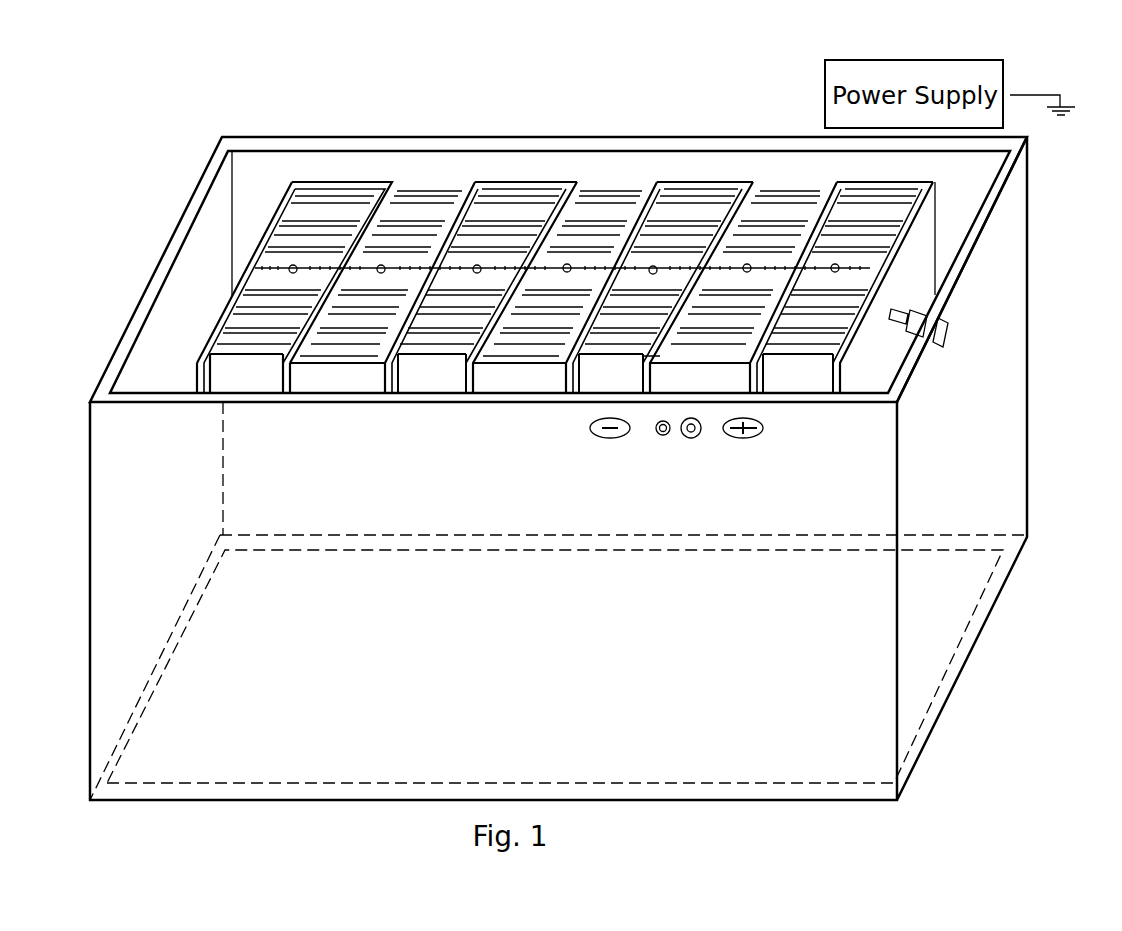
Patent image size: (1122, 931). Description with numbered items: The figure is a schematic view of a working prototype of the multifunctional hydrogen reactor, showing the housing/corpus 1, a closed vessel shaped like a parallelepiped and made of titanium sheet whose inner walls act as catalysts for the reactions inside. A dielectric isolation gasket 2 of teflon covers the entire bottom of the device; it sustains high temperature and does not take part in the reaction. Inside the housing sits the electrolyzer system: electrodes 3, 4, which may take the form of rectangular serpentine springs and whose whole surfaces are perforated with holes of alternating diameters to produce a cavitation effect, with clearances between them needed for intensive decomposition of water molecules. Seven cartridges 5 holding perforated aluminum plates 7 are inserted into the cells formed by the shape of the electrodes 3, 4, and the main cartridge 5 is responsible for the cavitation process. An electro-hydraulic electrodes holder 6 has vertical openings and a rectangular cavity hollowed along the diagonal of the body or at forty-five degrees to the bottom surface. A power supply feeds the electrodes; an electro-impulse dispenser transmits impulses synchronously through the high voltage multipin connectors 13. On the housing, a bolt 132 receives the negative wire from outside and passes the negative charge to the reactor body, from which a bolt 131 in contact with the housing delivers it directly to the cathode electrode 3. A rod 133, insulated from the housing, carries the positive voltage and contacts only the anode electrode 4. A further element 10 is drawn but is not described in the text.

The reactor housing/corpus 1 is at (260, 148).
The dielectric isolation gasket 2 is at (1007, 582).
The electrode (cathode) 3 is at (310, 176).
The electrode (anode) 4 is at (350, 182).
The cartridge 5 is at (360, 196).
The electro-hydraulic electrodes holder 6 is at (828, 267).
The perforated aluminum plate 7 is at (408, 203).
The connection terminal 10 is at (838, 266).
The high voltage multipin connector 13 is at (863, 268).
The bolt with nut 131 is at (944, 327).
The bolt with nut 132 is at (662, 436).
The rod 133 is at (692, 438).